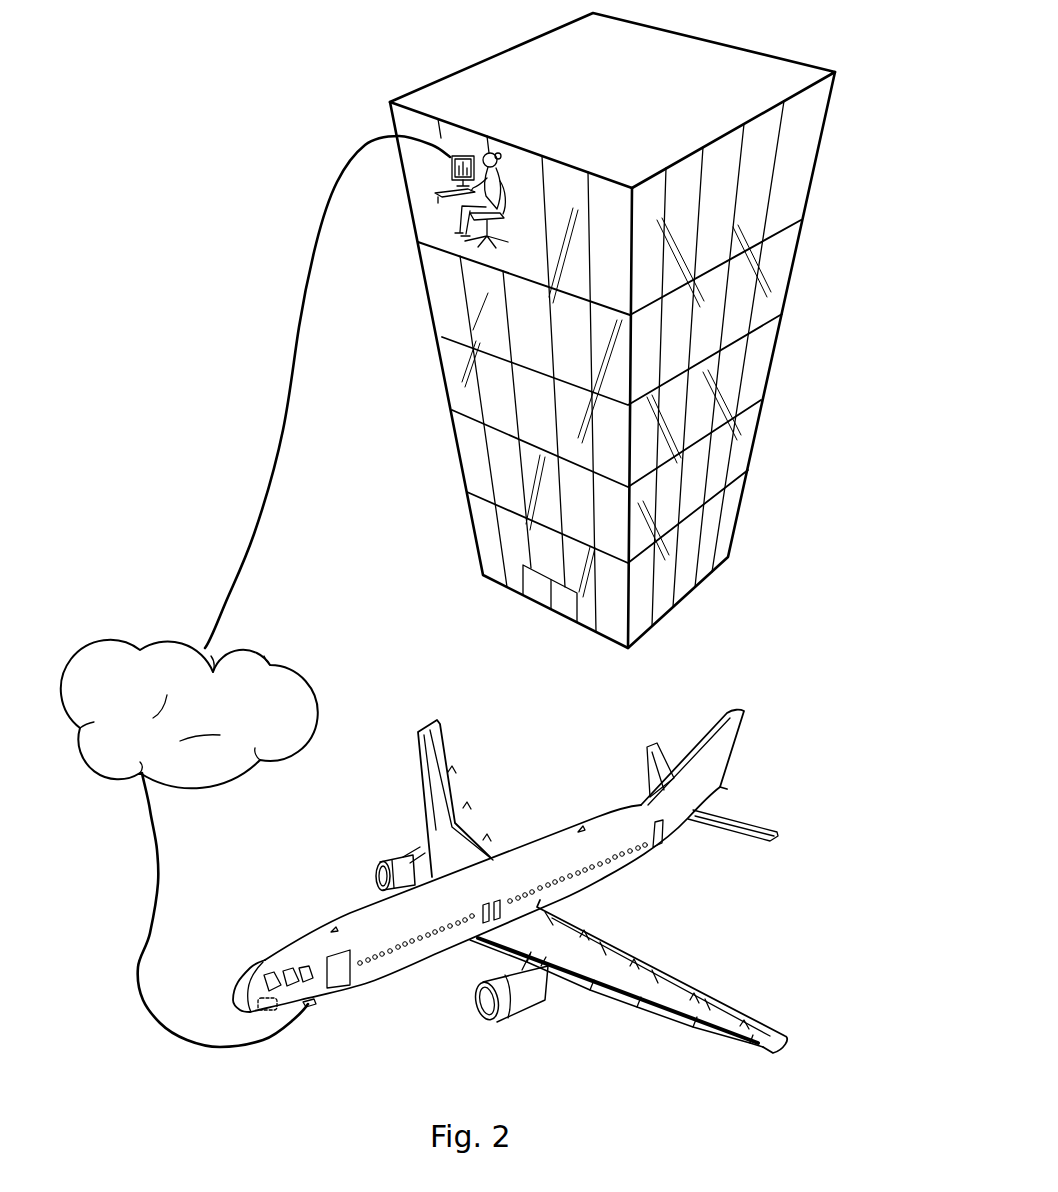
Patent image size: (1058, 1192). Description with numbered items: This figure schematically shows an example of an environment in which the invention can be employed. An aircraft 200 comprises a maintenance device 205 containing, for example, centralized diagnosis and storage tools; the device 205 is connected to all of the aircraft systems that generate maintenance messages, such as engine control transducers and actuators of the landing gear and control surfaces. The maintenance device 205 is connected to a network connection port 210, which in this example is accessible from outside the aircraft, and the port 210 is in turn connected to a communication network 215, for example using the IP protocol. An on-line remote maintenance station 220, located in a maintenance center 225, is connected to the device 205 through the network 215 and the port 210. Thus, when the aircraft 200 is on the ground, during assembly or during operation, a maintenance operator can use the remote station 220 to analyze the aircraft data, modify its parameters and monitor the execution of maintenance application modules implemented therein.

The aircraft 200 is at (597, 817).
The maintenance device 205 is at (262, 998).
The network connection port 210 is at (312, 1006).
The network 215 is at (170, 642).
The on-line remote maintenance station 220 is at (440, 172).
The maintenance center 225 is at (478, 75).